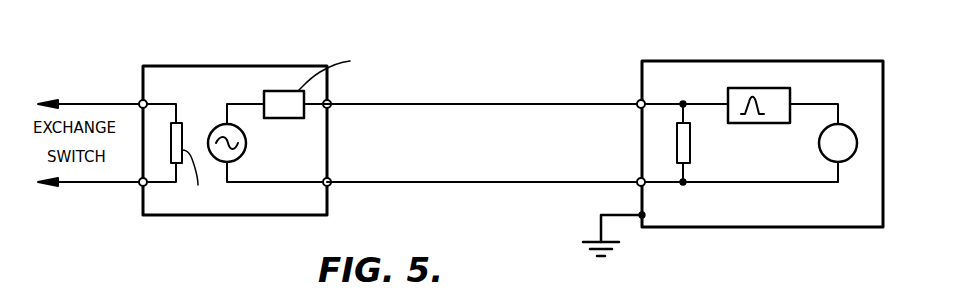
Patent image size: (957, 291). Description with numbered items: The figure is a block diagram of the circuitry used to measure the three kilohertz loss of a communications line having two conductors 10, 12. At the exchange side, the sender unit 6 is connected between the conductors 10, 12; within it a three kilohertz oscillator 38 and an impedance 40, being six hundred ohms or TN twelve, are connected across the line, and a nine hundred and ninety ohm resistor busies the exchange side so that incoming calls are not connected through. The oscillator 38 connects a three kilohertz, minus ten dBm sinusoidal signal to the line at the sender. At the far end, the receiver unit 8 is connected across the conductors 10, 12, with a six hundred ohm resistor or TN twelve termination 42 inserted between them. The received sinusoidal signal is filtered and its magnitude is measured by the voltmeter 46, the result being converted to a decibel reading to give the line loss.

The sender unit 6 is at (143, 67).
The receiver unit 8 is at (808, 61).
The conductor 10 is at (522, 104).
The conductor 12 is at (502, 182).
The 3 kHz oscillator 38 is at (215, 128).
The impedance 40 is at (278, 91).
The 600 Ω resistor or TN12 termination 42 is at (677, 152).
The voltmeter 46 is at (850, 157).